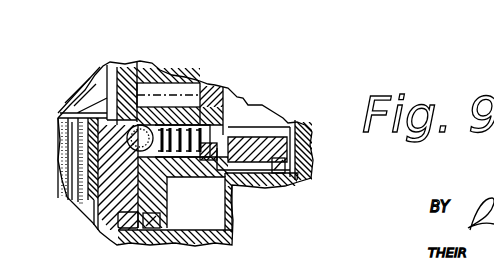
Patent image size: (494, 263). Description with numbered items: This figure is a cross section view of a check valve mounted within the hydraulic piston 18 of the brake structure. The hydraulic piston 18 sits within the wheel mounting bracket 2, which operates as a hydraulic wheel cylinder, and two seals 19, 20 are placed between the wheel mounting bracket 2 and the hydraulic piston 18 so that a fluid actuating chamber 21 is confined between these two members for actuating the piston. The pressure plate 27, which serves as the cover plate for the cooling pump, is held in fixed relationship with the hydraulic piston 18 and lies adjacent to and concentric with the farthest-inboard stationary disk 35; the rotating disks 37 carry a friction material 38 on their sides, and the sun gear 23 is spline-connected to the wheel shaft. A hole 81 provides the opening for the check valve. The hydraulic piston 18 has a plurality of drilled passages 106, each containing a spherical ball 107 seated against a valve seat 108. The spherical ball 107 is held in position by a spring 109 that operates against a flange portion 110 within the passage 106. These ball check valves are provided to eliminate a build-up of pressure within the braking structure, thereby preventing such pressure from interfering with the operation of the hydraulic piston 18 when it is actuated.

The wheel mounting bracket 2 is at (230, 208).
The hydraulic piston 18 is at (215, 93).
The seal 19 is at (275, 173).
The seal 20 is at (162, 208).
The fluid actuating chamber 21 is at (225, 228).
The sun gear 23 is at (187, 75).
The pressure plate 27 is at (128, 70).
The stationary disk 35 is at (90, 217).
The rotating disk 37 is at (77, 200).
The friction material 38 is at (63, 167).
The hole 81 is at (113, 145).
The drilled passage 106 is at (200, 126).
The spherical ball 107 is at (113, 118).
The valve seat 108 is at (140, 148).
The spring 109 is at (200, 134).
The flange portion 110 is at (238, 103).